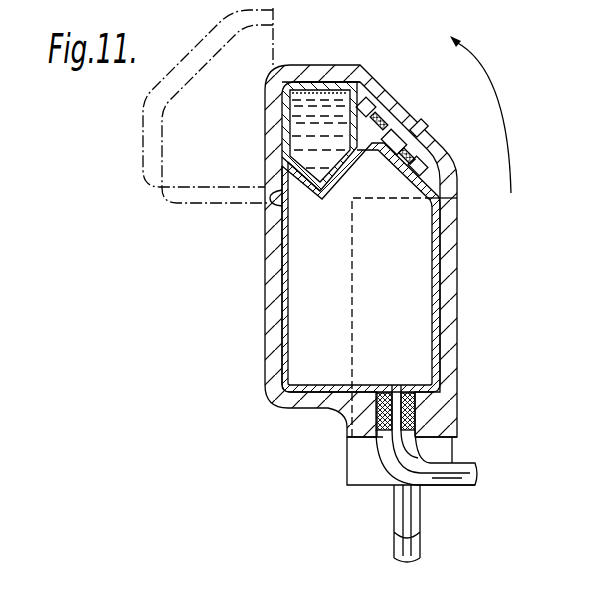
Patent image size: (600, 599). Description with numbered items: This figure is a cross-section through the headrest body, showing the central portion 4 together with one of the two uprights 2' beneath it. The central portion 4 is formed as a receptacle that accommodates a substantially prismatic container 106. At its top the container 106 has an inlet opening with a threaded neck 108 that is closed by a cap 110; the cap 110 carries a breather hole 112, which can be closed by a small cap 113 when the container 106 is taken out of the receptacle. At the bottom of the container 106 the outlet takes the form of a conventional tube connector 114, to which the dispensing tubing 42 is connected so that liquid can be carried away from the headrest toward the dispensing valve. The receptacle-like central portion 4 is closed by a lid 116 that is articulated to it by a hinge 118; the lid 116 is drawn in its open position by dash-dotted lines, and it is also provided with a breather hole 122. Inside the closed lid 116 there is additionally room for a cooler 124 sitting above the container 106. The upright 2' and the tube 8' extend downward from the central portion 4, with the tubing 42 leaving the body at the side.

The central portion 4 is at (450, 280).
The upright 2' is at (386, 461).
The outlet tube 8' is at (383, 523).
The dispensing tubing 42 is at (470, 466).
The container 106 is at (284, 281).
The threaded neck 108 is at (412, 155).
The cap 110 is at (440, 175).
The breather hole 112 is at (405, 152).
The small cap 113 is at (365, 108).
The tube connector 114 is at (398, 392).
The lid 116 is at (330, 74).
The hinge 118 is at (276, 204).
The breather hole 122 is at (420, 126).
The cooler 124 is at (285, 131).